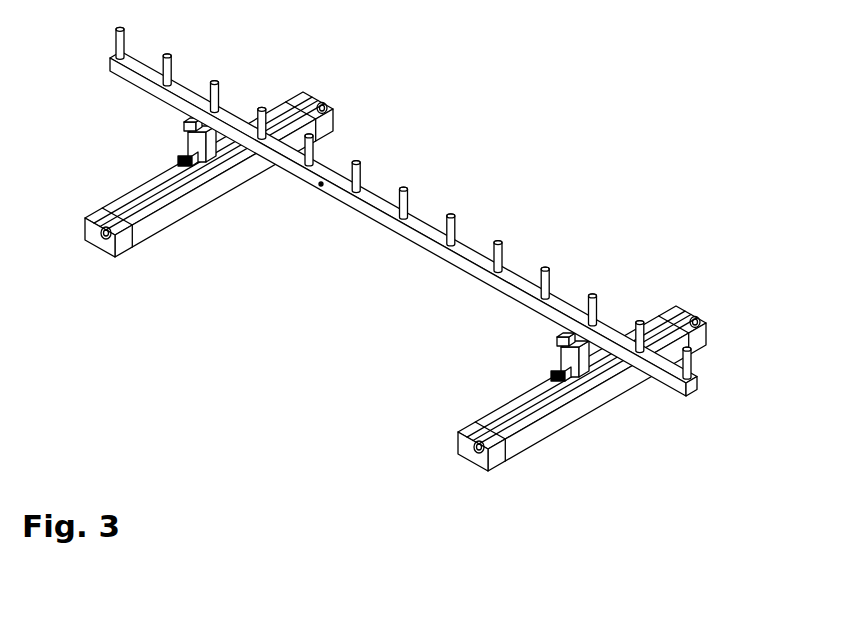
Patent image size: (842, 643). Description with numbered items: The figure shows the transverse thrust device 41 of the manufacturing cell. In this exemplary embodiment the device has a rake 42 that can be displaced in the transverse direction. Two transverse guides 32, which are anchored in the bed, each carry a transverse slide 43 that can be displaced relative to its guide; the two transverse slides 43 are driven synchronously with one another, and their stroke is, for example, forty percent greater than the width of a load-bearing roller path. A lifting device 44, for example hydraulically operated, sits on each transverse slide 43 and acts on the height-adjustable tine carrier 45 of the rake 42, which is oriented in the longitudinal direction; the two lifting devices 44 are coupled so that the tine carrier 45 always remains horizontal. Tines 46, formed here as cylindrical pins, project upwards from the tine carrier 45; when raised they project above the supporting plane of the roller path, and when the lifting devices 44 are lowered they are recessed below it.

The transverse guide 32 is at (492, 455).
The transverse thrust device 41 is at (403, 211).
The rake 42 is at (515, 267).
The transverse slide 43 is at (198, 165).
The lifting device 44 is at (208, 150).
The tine carrier 45 is at (321, 186).
The tine 46 is at (404, 190).